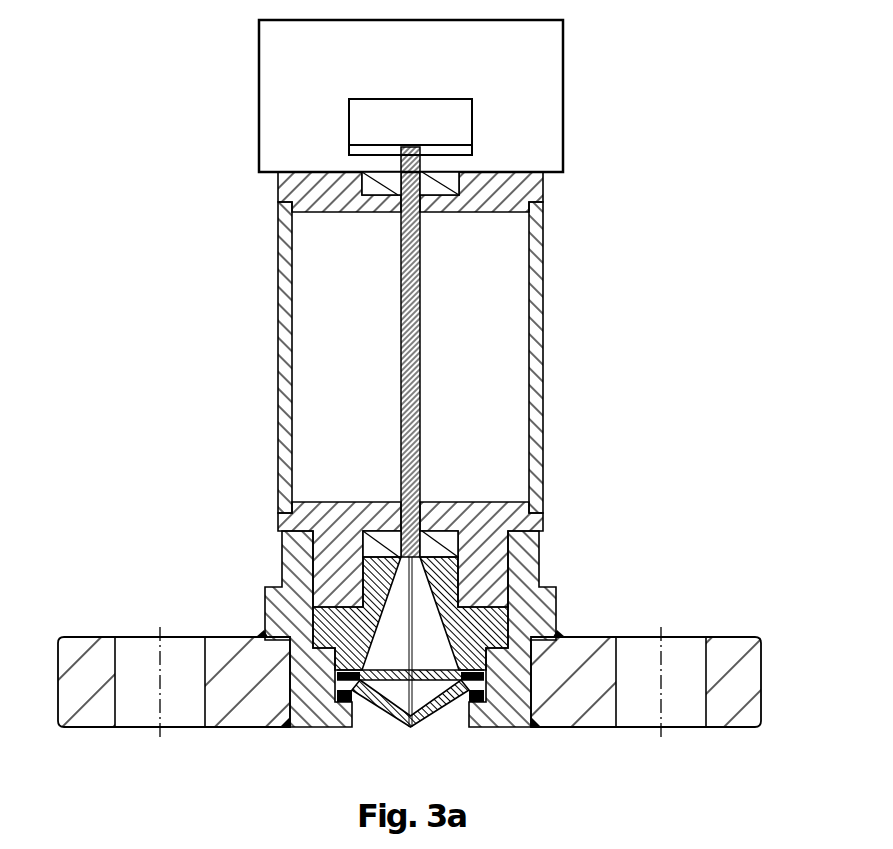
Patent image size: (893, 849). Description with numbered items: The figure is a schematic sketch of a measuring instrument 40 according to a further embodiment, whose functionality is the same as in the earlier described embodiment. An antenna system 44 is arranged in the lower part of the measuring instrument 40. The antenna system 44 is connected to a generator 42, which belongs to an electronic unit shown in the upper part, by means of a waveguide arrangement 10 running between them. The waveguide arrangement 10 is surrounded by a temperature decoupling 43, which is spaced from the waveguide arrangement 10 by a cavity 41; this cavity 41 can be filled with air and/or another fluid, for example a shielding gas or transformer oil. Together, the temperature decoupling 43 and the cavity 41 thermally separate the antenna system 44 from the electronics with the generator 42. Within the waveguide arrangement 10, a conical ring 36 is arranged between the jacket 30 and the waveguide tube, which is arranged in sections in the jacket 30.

The waveguide arrangement 10 is at (586, 453).
The jacket 30 is at (522, 185).
The conical ring 36 is at (378, 190).
The measuring instrument 40 is at (202, 76).
The cavity 41 is at (332, 432).
The generator 42 is at (392, 137).
The temperature decoupling 43 is at (542, 352).
The antenna system 44 is at (483, 743).